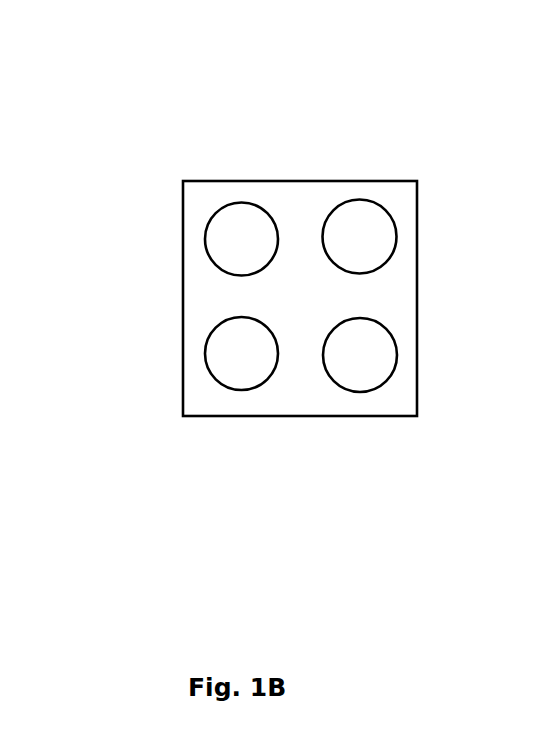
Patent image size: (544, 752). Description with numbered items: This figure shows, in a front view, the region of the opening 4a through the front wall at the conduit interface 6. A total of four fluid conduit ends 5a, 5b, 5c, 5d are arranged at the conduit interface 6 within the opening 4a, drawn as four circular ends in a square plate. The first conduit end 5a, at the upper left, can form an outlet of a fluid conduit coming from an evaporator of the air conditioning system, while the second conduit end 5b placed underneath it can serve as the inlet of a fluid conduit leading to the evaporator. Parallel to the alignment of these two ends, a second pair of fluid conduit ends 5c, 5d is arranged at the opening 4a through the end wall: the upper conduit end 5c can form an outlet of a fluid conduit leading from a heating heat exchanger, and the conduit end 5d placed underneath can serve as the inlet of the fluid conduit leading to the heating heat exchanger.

The opening 4a is at (418, 298).
The first conduit end 5a is at (218, 213).
The second conduit end 5b is at (215, 381).
The upper conduit end 5c is at (375, 203).
The conduit end 5d is at (377, 395).
The conduit interface 6 is at (261, 79).